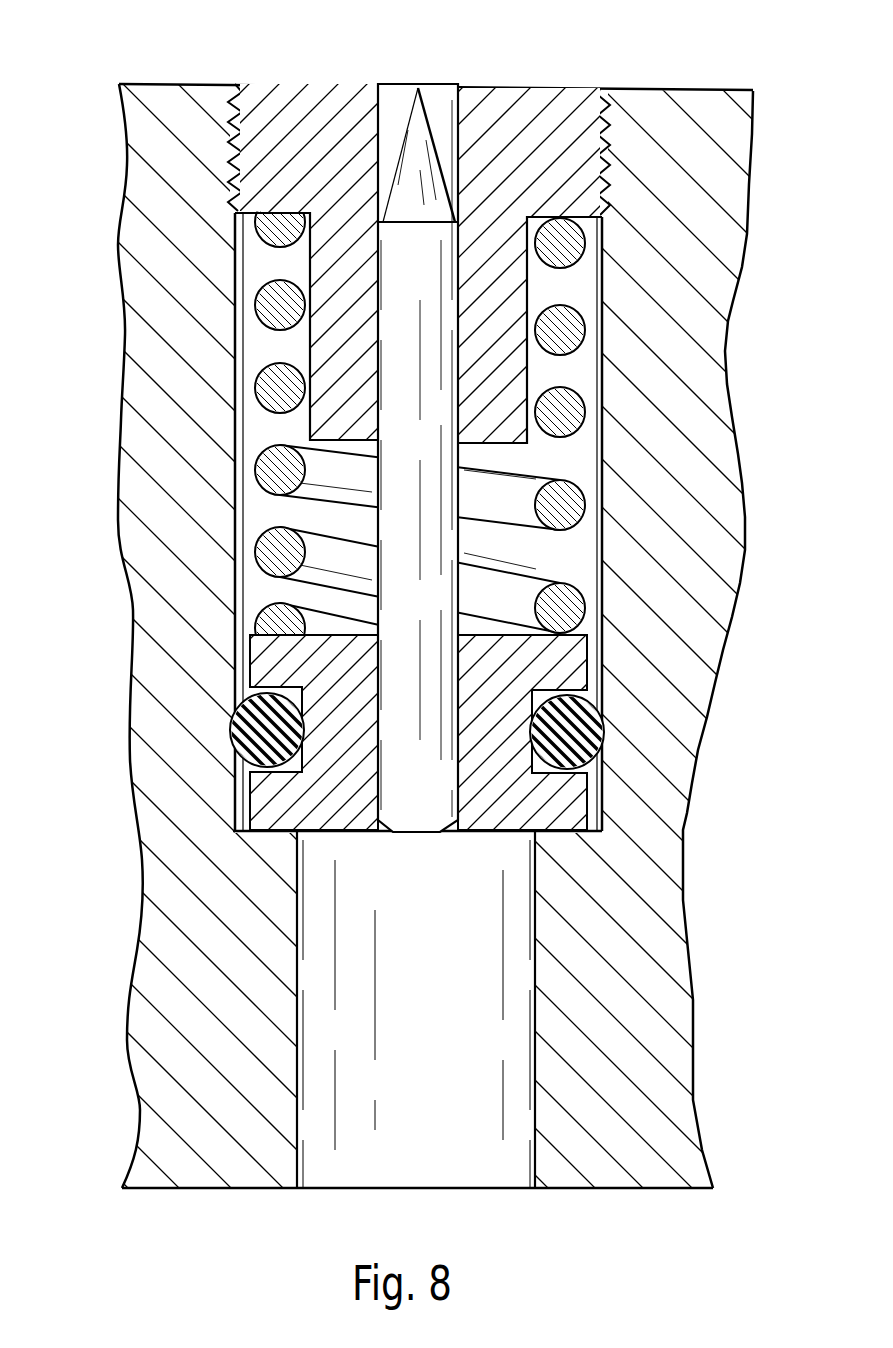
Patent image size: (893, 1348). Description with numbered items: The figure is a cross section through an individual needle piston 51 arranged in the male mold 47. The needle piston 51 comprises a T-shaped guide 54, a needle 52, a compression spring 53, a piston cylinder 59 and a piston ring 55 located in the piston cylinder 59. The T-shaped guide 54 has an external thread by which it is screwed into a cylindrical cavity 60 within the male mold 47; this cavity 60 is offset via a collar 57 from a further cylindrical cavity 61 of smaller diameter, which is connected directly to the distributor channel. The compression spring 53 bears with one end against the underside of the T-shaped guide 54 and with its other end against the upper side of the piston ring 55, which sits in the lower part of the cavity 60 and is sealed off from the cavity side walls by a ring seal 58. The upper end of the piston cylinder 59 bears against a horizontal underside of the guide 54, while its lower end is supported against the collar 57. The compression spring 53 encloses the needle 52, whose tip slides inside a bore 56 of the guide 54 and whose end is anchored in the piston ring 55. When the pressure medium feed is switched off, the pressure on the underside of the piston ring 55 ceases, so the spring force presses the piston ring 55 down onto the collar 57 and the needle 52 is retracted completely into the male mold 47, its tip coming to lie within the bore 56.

The male mold 47 is at (672, 342).
The needle piston 51 is at (757, 610).
The needle 52 is at (390, 528).
The compression spring 53 is at (282, 388).
The T-shaped guide 54 is at (294, 110).
The piston ring 55 is at (270, 800).
The bore 56 is at (460, 117).
The collar 57 is at (560, 826).
The ring seal 58 is at (263, 718).
The piston cylinder 59 is at (240, 601).
The cylindrical cavity 60 is at (593, 478).
The further cylindrical cavity 61 is at (306, 1012).